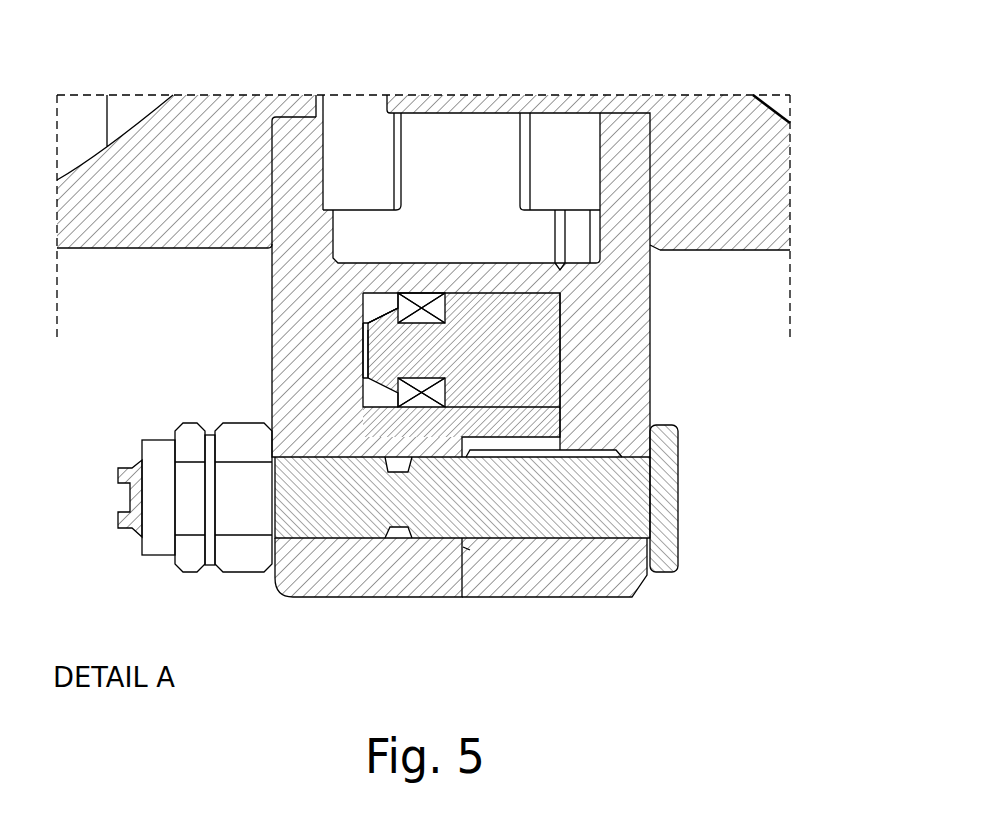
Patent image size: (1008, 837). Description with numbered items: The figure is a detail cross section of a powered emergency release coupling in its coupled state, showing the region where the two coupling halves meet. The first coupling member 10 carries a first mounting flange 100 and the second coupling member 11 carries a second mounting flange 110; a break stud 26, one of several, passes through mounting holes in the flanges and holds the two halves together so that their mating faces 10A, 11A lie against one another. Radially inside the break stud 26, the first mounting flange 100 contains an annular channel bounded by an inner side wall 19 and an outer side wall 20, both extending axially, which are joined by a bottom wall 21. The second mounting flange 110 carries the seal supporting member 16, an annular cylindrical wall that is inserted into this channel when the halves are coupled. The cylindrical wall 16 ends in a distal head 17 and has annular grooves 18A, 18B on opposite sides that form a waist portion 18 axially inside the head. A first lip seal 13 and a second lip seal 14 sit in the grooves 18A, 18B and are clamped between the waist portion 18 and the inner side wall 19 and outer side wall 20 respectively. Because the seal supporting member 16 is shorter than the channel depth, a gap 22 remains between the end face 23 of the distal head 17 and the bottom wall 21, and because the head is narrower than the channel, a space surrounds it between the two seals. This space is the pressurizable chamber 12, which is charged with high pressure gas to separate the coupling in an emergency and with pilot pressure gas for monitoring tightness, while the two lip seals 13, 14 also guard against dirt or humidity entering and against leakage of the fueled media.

The first coupling member 10 is at (207, 125).
The second coupling member 11 is at (760, 206).
The second mounting flange 110 is at (632, 300).
The first lip seal 13 is at (560, 356).
The second lip seal 14 is at (580, 414).
The seal supporting member 16 is at (578, 384).
The distal head 17 is at (385, 322).
The waist portion 18 is at (436, 362).
The annular groove 18A is at (424, 318).
The annular groove 18B is at (413, 380).
The inner side wall 19 is at (386, 307).
The outer side wall 20 is at (380, 400).
The bottom wall 21 is at (378, 300).
The gap 22 is at (366, 335).
The end face 23 is at (363, 373).
The pressurizable chamber 12 is at (366, 322).
The break stud 26 is at (622, 507).
The first mounting flange 100 is at (323, 430).
The mating face 10A is at (465, 561).
The mating face 11A is at (463, 577).